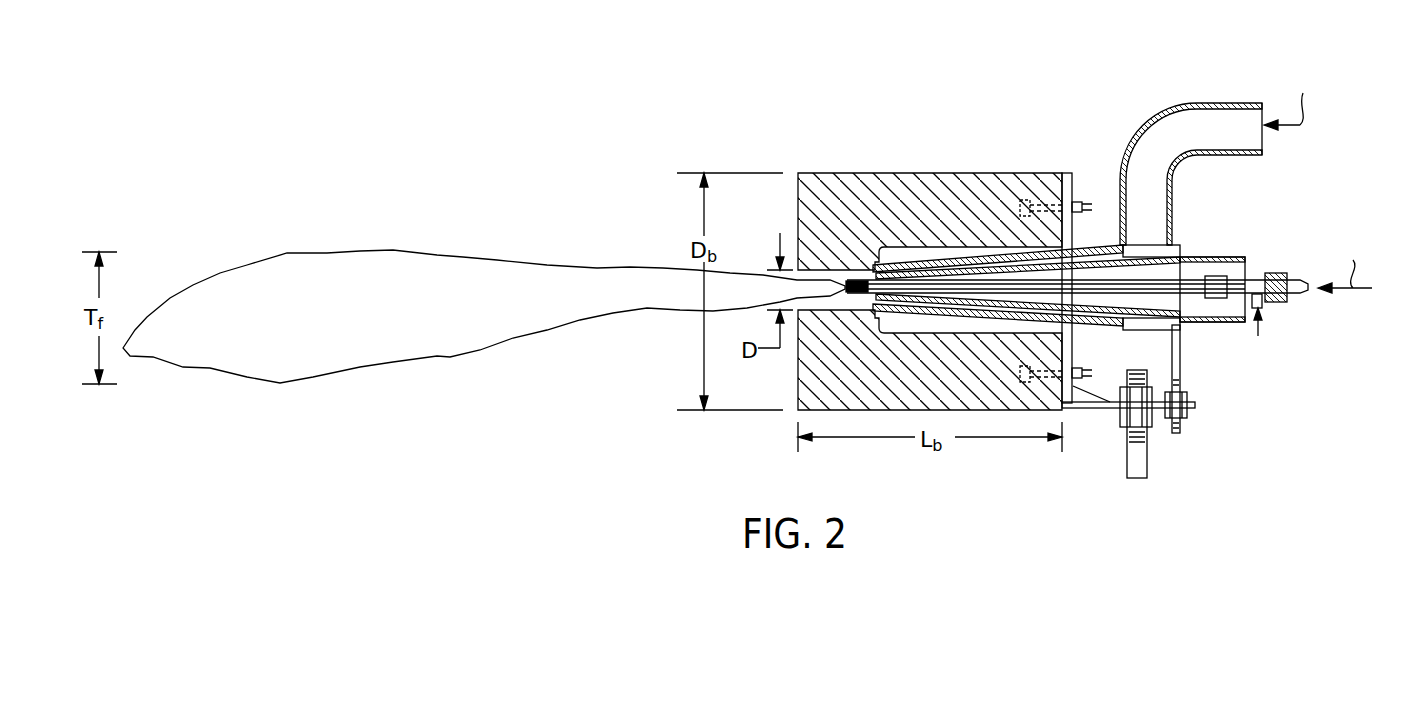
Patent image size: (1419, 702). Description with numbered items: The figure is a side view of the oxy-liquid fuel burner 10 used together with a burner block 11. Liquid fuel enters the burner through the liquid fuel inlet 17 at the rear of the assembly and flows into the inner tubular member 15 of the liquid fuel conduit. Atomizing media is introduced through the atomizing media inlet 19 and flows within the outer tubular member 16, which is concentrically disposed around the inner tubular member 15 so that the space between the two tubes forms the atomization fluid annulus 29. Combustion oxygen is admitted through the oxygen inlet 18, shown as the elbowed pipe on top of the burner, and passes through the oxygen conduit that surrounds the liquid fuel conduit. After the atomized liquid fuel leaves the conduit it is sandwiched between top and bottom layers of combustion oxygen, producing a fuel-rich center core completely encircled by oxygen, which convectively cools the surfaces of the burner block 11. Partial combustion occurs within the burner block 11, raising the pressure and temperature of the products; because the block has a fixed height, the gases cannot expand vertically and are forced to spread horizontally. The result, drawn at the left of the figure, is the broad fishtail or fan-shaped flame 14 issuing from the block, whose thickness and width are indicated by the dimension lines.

The burner assembly 10 is at (1207, 381).
The burner block 11 is at (938, 173).
The flame 14 is at (334, 319).
The inner tubular member 15 is at (1190, 284).
The outer tubular member 16 is at (1128, 298).
The liquid fuel inlet 17 is at (1306, 293).
The oxygen inlet 18 is at (1264, 143).
The atomizing media inlet 19 is at (1262, 302).
The atomization fluid annulus 29 is at (982, 287).